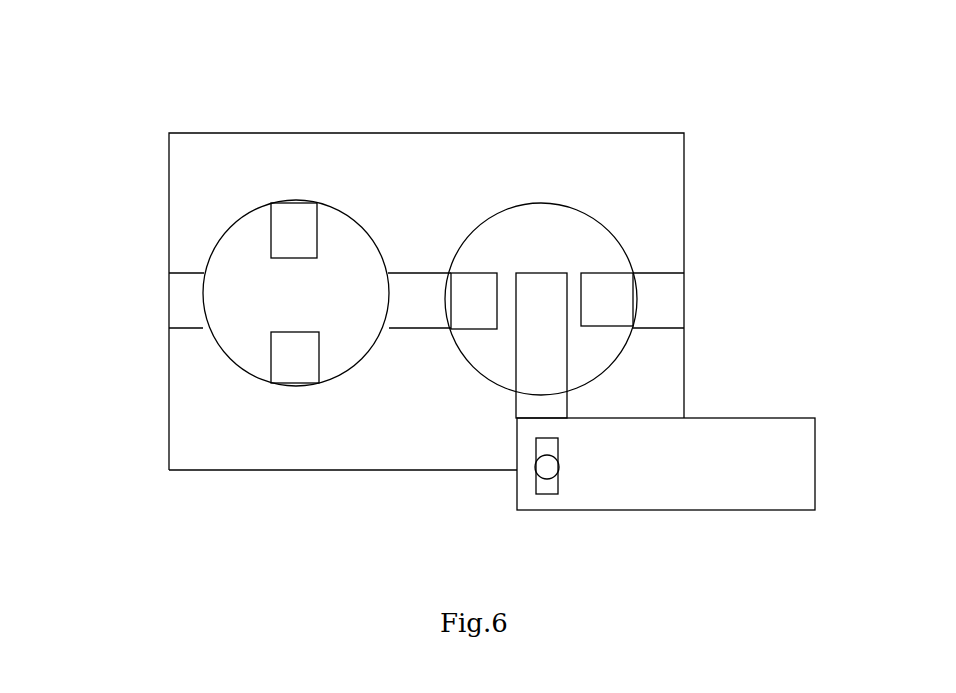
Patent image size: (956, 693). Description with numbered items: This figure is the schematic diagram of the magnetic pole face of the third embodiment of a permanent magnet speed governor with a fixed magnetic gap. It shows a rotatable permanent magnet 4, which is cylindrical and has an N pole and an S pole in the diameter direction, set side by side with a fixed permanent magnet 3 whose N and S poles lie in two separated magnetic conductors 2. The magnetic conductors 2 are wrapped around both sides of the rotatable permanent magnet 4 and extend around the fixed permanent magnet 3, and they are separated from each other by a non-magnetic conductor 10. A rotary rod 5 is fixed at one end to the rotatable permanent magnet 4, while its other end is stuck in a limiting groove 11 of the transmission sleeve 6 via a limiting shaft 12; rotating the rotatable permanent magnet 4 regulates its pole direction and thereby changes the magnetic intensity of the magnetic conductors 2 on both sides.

The magnetic conductor 2 is at (184, 195).
The fixed permanent magnet 3 is at (247, 375).
The rotatable permanent magnet 4 is at (480, 375).
The rotary rod 5 is at (567, 349).
The transmission sleeve 6 is at (762, 473).
The non-magnetic conductor 10 is at (658, 273).
The limiting groove 11 is at (535, 495).
The limiting shaft 12 is at (547, 467).